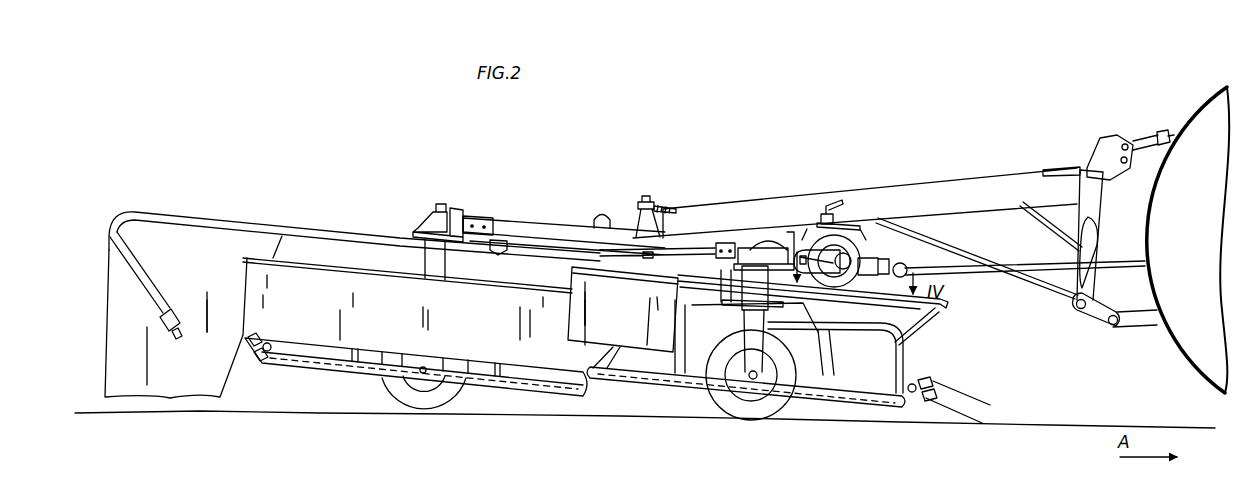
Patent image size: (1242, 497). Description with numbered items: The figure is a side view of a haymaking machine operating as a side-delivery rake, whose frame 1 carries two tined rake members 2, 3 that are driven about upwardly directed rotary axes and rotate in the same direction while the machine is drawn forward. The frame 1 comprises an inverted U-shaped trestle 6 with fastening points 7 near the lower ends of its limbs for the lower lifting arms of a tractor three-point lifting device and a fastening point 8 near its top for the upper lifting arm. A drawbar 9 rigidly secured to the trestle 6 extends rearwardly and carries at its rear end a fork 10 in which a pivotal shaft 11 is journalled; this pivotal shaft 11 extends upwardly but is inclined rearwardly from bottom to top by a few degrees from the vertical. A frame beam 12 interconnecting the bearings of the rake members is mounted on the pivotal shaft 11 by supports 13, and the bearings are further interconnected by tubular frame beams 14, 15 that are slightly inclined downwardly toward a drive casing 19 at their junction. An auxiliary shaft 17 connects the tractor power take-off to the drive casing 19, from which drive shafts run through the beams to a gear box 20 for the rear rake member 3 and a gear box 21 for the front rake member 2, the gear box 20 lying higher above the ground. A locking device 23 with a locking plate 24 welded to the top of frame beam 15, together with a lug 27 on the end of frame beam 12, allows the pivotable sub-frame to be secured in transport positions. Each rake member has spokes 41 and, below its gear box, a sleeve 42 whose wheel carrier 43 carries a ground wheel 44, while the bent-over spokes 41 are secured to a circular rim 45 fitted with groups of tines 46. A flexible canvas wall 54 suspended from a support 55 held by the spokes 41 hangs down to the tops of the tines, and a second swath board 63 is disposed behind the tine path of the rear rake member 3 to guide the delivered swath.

The frame 1 is at (757, 180).
The rake member 2 is at (648, 387).
The rake member 3 is at (322, 386).
The trestle 6 is at (1097, 206).
The fastening points 7 is at (1098, 326).
The fastening point 8 is at (1128, 140).
The drawbar 9 is at (950, 189).
The fork 10 is at (678, 207).
The pivotal shaft 11 is at (644, 196).
The frame beam 12 is at (557, 230).
The supports 13 is at (608, 216).
The tubular frame beam 14 is at (532, 218).
The tubular frame beam 15 is at (797, 254).
The auxiliary shaft 17 is at (1032, 262).
The drive casing 19 is at (862, 262).
The gear box 20 is at (425, 222).
The gear box 21 is at (752, 246).
The locking device 23 is at (848, 221).
The locking plate 24 is at (810, 236).
The lug 27 is at (728, 238).
The spokes 41 is at (890, 346).
The sleeve 42 is at (745, 318).
The wheel carrier 43 is at (758, 348).
The ground wheel 44 is at (424, 410).
The rim 45 is at (304, 360).
The groups of tines 46 is at (257, 358).
The flexible wall 54 is at (277, 311).
The support 55 is at (243, 259).
The second swath board 63 is at (205, 238).